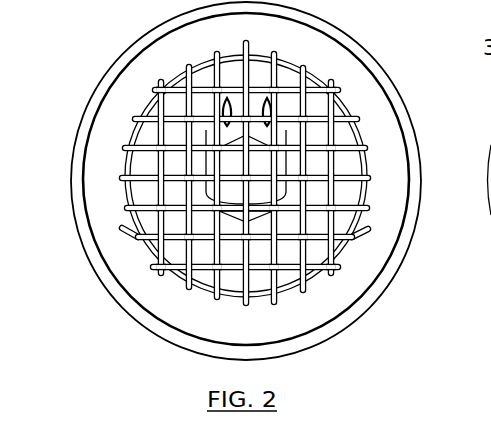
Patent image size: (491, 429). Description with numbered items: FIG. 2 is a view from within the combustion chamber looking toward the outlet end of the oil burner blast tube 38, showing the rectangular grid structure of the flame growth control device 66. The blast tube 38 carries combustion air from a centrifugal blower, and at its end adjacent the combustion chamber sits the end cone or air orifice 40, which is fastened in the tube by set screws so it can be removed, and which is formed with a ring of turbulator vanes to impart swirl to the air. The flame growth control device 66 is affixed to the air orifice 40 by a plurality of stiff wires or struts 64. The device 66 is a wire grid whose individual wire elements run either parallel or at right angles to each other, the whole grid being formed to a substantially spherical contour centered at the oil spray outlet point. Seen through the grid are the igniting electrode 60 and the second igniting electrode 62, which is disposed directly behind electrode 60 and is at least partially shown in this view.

The blast tube 38 is at (97, 82).
The air orifice 40 is at (378, 101).
The igniting electrode 60 is at (268, 108).
The igniting electrode 62 is at (225, 103).
The stiff wires or struts 64 is at (252, 176).
The flame growth control device 66 is at (333, 139).